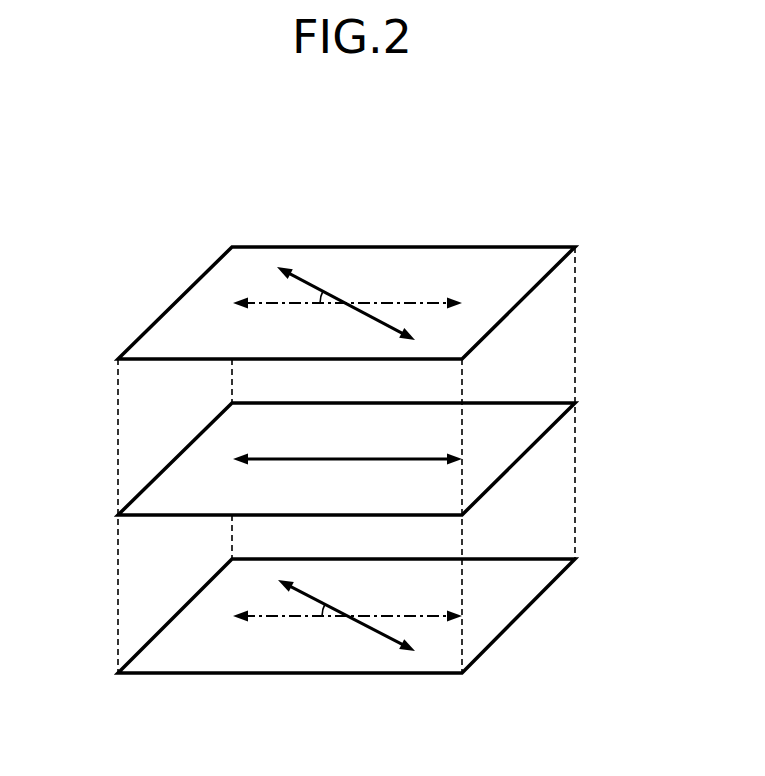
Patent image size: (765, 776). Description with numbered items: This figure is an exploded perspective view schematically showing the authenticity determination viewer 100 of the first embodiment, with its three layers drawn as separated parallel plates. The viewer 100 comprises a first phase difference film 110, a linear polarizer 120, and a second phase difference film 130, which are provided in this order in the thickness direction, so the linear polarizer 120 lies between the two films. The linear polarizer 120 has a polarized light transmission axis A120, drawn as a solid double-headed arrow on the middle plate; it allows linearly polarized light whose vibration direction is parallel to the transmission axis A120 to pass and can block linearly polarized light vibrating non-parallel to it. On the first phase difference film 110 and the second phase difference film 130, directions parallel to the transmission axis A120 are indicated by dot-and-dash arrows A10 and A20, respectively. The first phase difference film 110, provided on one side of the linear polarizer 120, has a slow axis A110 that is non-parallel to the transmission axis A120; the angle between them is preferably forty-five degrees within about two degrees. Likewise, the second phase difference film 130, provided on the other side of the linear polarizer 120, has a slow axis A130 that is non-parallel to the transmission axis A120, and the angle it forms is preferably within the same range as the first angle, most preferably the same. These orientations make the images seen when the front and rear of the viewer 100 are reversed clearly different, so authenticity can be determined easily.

The authenticity determination viewer 100 is at (573, 122).
The first phase difference film 110 is at (518, 616).
The linear polarizer 120 is at (518, 459).
The second phase difference film 130 is at (520, 302).
The arrow indicating direction parallel to polarized light transmission axis A10 is at (263, 616).
The slow axis of the first phase difference film A110 is at (398, 638).
The polarized light transmission axis A120 is at (263, 459).
The arrow indicating direction parallel to polarized light transmission axis A20 is at (263, 302).
The slow axis of the second phase difference film A130 is at (325, 293).